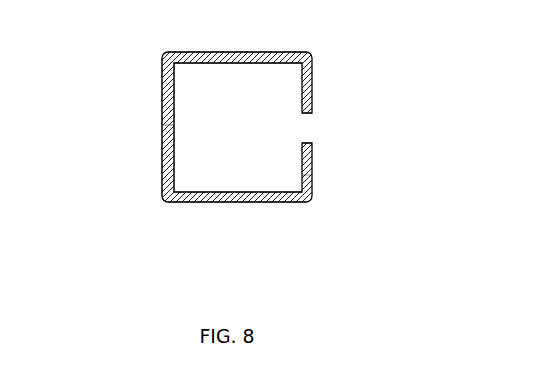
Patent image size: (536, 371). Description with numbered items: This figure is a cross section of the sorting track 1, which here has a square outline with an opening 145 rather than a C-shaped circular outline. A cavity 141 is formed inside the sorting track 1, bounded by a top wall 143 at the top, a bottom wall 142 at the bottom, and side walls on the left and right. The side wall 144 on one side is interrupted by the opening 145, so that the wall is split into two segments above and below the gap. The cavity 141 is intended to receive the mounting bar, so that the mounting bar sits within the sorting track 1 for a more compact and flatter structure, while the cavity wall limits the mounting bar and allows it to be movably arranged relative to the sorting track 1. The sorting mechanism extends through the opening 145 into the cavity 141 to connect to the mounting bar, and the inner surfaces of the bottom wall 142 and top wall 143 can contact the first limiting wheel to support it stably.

The sorting track 1 is at (248, 62).
The cavity 141 is at (213, 110).
The bottom wall 142 is at (223, 202).
The top wall 143 is at (208, 62).
The side wall 144 is at (163, 130).
The opening 145 is at (305, 130).